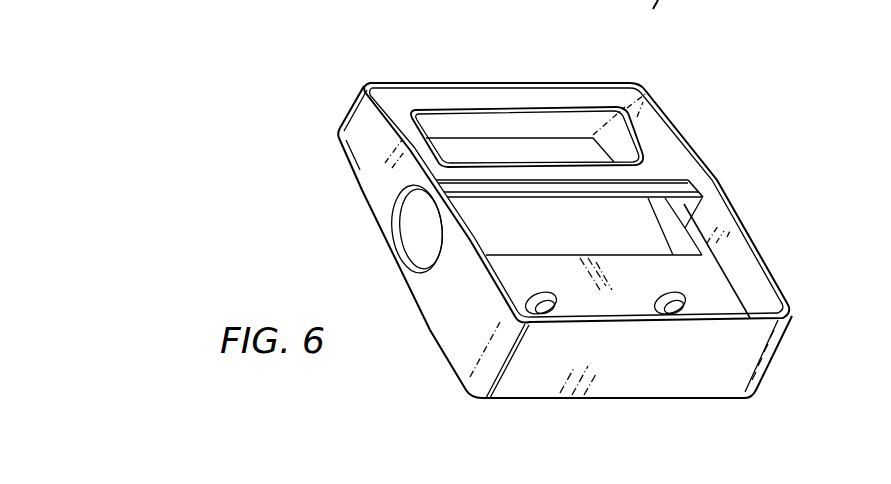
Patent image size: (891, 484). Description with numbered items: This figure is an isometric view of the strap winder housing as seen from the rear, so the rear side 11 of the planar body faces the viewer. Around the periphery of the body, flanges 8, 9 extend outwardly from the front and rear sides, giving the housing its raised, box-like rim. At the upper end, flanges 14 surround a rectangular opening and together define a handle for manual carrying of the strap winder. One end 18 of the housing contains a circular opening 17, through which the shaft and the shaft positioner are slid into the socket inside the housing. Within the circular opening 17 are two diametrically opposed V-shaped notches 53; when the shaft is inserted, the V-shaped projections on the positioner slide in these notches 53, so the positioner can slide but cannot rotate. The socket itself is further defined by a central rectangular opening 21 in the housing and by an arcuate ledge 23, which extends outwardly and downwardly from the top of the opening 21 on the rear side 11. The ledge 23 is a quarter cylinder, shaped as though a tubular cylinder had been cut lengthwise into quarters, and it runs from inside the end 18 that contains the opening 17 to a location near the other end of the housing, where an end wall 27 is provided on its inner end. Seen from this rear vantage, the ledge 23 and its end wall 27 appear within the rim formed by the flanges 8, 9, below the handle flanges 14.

The flange 8 is at (767, 257).
The flange 9 is at (428, 326).
The rear side 11 is at (728, 298).
The flanges surrounding the opening 14 is at (531, 123).
The circular opening 17 is at (391, 258).
The end of the housing 18 is at (470, 303).
The central rectangular opening 21 is at (542, 258).
The arcuate ledge 23 is at (577, 193).
The end wall 27 is at (684, 205).
The V-shaped notches 53 is at (418, 188).